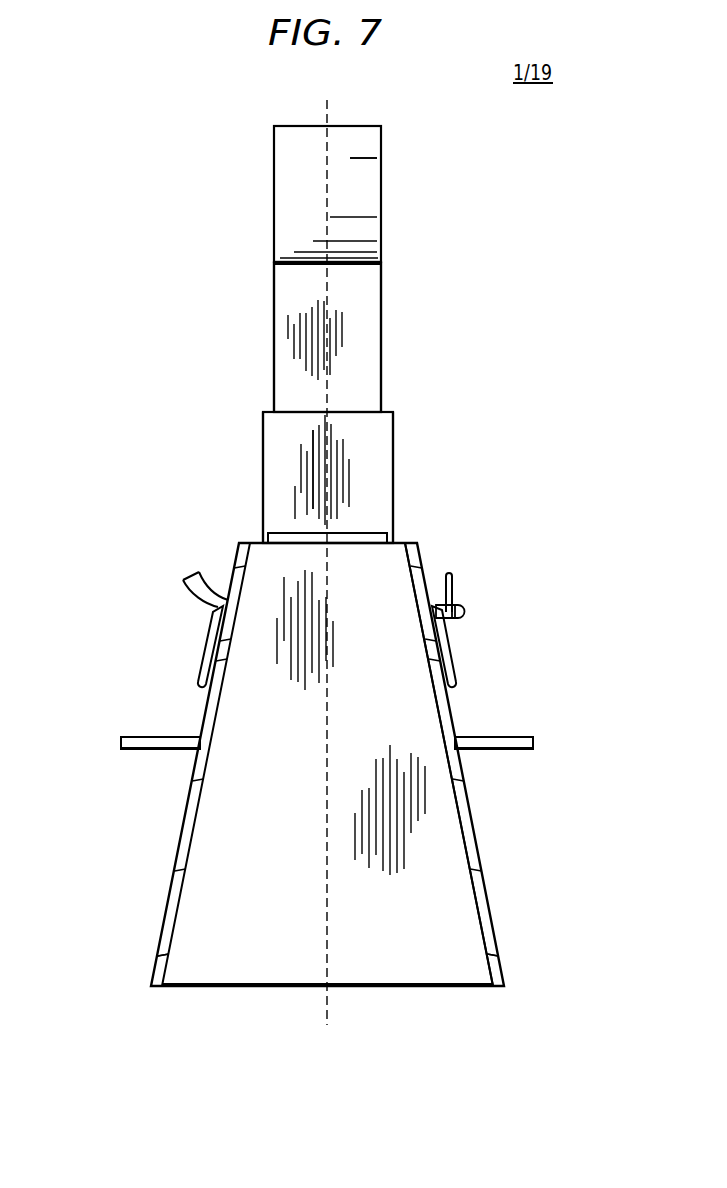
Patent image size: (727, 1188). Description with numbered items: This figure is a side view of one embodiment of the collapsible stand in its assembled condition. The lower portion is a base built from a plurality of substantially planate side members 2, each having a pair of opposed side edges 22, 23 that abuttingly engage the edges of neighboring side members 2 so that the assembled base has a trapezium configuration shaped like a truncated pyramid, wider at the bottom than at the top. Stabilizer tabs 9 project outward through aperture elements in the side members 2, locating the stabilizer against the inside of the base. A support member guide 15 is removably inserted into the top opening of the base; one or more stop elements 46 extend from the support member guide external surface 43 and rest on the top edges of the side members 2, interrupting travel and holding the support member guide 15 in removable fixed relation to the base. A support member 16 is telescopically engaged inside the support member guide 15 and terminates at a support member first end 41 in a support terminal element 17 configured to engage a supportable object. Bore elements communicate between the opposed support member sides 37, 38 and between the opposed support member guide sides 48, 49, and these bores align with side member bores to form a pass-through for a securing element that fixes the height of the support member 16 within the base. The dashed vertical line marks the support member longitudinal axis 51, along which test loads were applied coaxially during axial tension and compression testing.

The side member 2 is at (138, 975).
The stabilizer tab 9 is at (135, 750).
The support member guide 15 is at (410, 450).
The support member 16 is at (398, 331).
The support terminal element 17 is at (398, 167).
The side edge 22 is at (168, 925).
The side edge 23 is at (160, 950).
The support member side 37 is at (274, 327).
The support member side 38 is at (381, 374).
The support member first end 41 is at (348, 272).
The support member guide external surface 43 is at (297, 447).
The stop element 46 is at (375, 532).
The support member guide side 48 is at (263, 500).
The support member guide side 49 is at (393, 474).
The support member longitudinal axis 51 is at (327, 187).